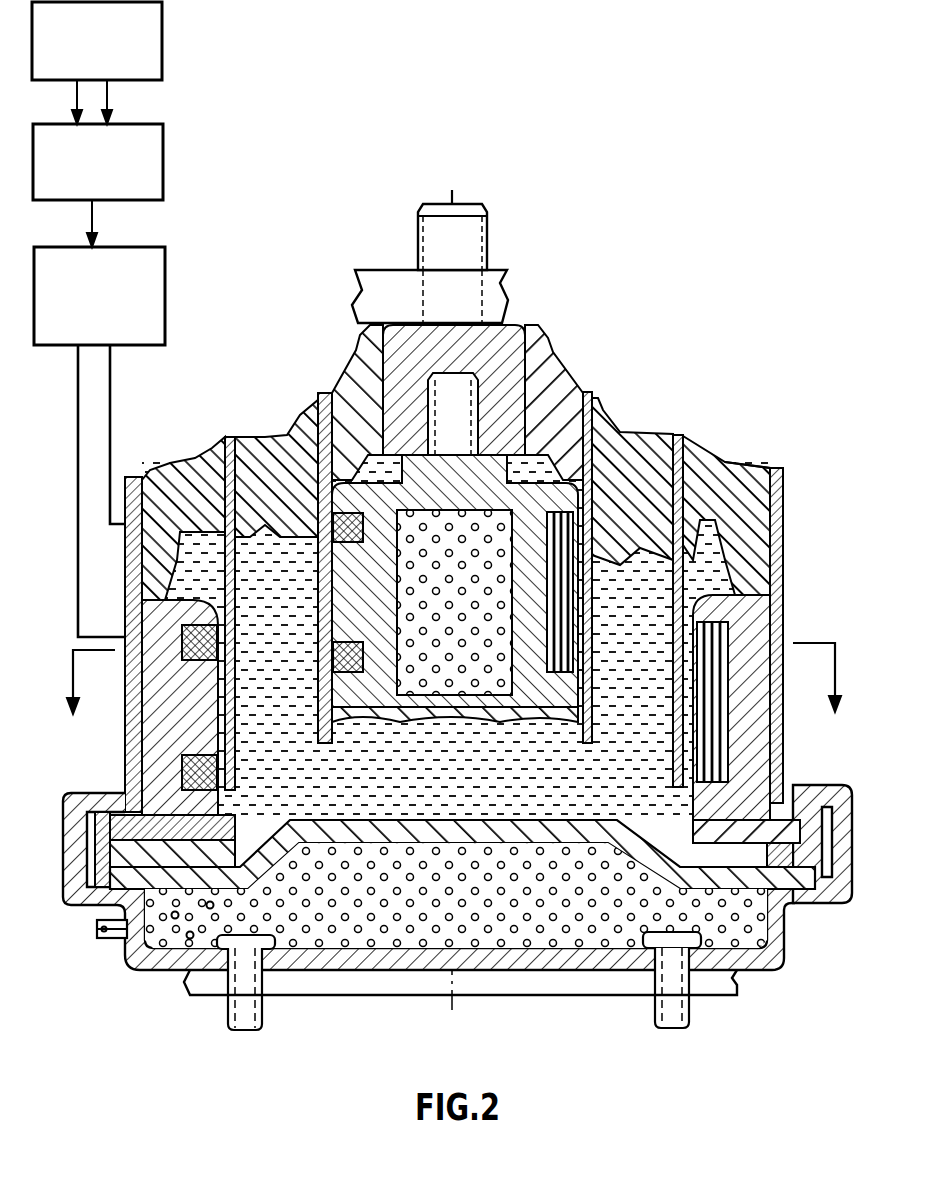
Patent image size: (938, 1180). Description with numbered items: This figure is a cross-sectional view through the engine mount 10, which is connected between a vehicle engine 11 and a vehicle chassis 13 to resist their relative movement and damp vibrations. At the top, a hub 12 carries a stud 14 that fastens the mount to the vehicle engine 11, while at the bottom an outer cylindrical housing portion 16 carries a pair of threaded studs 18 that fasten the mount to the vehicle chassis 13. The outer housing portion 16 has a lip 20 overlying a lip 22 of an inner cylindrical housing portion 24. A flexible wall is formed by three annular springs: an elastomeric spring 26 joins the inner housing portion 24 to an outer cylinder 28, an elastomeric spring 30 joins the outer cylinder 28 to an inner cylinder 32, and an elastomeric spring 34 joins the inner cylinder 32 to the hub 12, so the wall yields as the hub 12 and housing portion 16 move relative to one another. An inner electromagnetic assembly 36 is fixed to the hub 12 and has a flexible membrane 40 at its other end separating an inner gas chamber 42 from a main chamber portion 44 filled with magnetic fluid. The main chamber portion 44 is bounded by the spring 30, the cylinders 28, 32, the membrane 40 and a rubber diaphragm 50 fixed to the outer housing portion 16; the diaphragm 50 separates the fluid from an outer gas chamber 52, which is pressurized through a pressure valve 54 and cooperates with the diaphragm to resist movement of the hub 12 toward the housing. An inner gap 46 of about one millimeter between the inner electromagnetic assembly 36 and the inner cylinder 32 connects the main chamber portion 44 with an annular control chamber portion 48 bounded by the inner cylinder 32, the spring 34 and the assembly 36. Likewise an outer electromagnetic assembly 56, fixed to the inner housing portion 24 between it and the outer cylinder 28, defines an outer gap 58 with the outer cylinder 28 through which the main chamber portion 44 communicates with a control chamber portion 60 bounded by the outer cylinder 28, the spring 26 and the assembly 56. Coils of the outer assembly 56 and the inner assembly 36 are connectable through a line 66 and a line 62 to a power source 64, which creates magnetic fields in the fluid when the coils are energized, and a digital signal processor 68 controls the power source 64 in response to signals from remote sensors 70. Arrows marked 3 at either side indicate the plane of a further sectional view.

The remote sensors 70 is at (162, 62).
The digital signal processor 68 is at (162, 190).
The power source 64 is at (165, 305).
The line 62 is at (110, 440).
The line 66 is at (78, 538).
The section line 3 is at (454, 699).
The stud 14 is at (472, 243).
The vehicle engine 11 is at (385, 285).
The control chamber portion 48 is at (370, 430).
The hub 12 is at (503, 320).
The elastomeric spring 34 is at (552, 415).
The inner electromagnetic assembly 36 is at (372, 500).
The inner gap 46 is at (320, 470).
The inner cylinder 32 is at (590, 400).
The elastomeric spring 30 is at (630, 470).
The outer cylinder 28 is at (682, 440).
The elastomeric spring 26 is at (718, 485).
The engine mount 10 is at (647, 247).
The control chamber portion 60 is at (780, 470).
The inner cylindrical housing portion 24 is at (785, 545).
The outer electromagnetic assembly 56 is at (760, 600).
The outer gap 58 is at (722, 648).
The lip 20 is at (798, 790).
The lip 22 is at (805, 810).
The outer cylindrical housing portion 16 is at (852, 884).
The threaded studs 18 is at (675, 1000).
The vehicle chassis 13 is at (370, 985).
The flexible membrane 40 is at (400, 700).
The inner gas chamber 42 is at (488, 715).
The main chamber portion 44 is at (557, 793).
The rubber diaphragm 50 is at (330, 835).
The outer gas chamber 52 is at (190, 932).
The pressure valve 54 is at (113, 942).